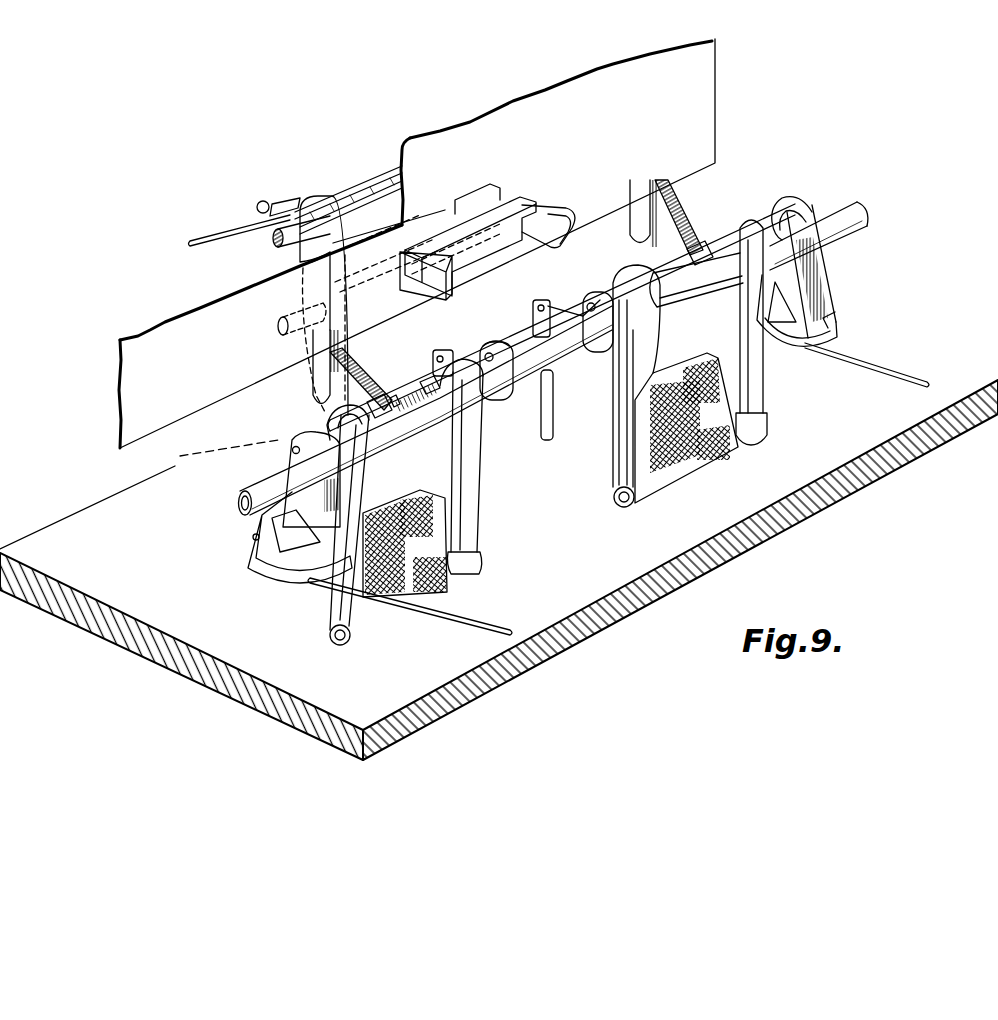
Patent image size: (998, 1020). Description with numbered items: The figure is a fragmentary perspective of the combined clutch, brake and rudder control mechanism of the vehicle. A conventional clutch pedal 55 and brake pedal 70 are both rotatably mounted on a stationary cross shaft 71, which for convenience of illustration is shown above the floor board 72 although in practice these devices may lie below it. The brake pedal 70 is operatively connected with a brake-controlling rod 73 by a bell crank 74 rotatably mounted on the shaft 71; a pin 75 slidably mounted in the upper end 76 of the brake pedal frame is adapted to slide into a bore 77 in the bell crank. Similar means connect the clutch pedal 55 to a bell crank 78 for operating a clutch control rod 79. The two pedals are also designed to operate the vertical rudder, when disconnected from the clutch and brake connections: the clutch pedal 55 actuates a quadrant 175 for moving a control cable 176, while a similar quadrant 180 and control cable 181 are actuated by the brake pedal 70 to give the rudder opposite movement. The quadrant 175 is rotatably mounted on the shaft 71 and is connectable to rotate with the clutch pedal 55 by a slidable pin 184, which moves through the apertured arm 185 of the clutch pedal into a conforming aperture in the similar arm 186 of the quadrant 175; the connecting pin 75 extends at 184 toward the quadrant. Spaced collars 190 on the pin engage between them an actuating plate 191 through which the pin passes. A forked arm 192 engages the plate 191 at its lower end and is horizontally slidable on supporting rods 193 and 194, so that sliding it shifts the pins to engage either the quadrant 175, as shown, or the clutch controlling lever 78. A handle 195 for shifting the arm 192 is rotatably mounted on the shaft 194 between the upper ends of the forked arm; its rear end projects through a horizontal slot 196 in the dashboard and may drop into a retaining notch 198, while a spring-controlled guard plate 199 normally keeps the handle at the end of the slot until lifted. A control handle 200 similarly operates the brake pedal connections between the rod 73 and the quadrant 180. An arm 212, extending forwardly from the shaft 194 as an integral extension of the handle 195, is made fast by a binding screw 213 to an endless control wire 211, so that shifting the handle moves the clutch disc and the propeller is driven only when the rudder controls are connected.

The clutch pedal 55 is at (420, 540).
The brake pedal 70 is at (683, 460).
The cross shaft 71 is at (270, 484).
The floor board 72 is at (197, 637).
The brake-controlling rod 73 is at (541, 413).
The bell crank 74 is at (560, 308).
The pin 75 is at (417, 390).
The upper end of brake pedal frame 76 is at (700, 305).
The bore 77 is at (486, 356).
The bell crank 78 is at (497, 340).
The clutch control rod 79 is at (433, 358).
The quadrant 175 is at (277, 560).
The control cable 176 is at (440, 610).
The quadrant 180 is at (820, 295).
The control cable 181 is at (880, 368).
The slidable pin 184 is at (330, 430).
The apertured arm 185 is at (387, 443).
The arm 186 is at (300, 437).
The collars 190 is at (425, 430).
The actuating plate 191 is at (357, 373).
The forked arm 192 is at (313, 257).
The supporting rod 193 is at (290, 313).
The supporting rod 194 is at (367, 200).
The handle 195 is at (430, 290).
The horizontal slot 196 is at (433, 240).
The retaining notch 198 is at (468, 256).
The spring-controlled guard plate 199 is at (470, 207).
The control handle 200 is at (553, 215).
The endless control wire 211 is at (330, 187).
The arm 212 is at (282, 205).
The binding screw 213 is at (257, 207).